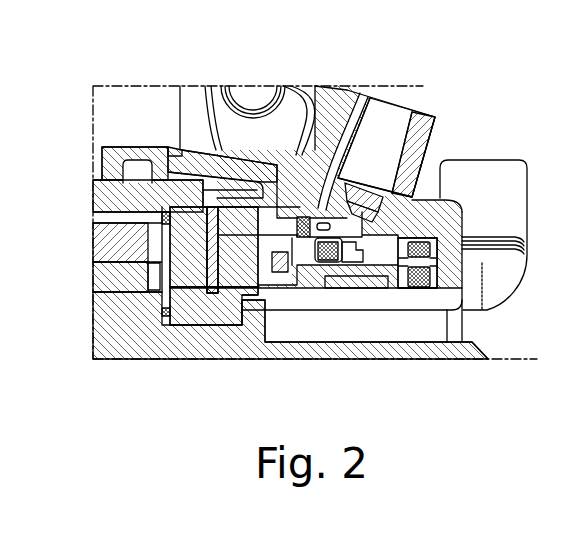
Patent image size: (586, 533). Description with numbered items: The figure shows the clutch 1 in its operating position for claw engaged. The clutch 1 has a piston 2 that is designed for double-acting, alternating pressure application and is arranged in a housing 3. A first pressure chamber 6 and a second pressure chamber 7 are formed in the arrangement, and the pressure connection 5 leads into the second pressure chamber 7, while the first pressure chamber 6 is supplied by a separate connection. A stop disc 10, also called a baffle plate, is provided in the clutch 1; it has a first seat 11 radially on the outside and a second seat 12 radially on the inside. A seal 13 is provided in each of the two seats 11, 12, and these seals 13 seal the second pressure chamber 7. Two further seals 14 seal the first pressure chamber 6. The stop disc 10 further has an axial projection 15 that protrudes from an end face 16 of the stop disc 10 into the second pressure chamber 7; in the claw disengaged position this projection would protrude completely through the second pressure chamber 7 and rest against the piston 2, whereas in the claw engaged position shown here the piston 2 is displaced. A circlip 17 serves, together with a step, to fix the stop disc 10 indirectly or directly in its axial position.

The clutch 1 is at (243, 378).
The piston 2 is at (303, 300).
The housing 3 is at (428, 300).
The pressure connection 5 is at (377, 160).
The first pressure chamber 6 is at (440, 266).
The second pressure chamber 7 is at (405, 222).
The stop disc 10 is at (364, 93).
The first seat 11 is at (320, 212).
The second seat 12 is at (335, 288).
The seal 13 is at (270, 240).
The further seal 14 is at (450, 199).
The axial projection 15 is at (352, 278).
The end face 16 is at (418, 182).
The circlip 17 is at (150, 148).